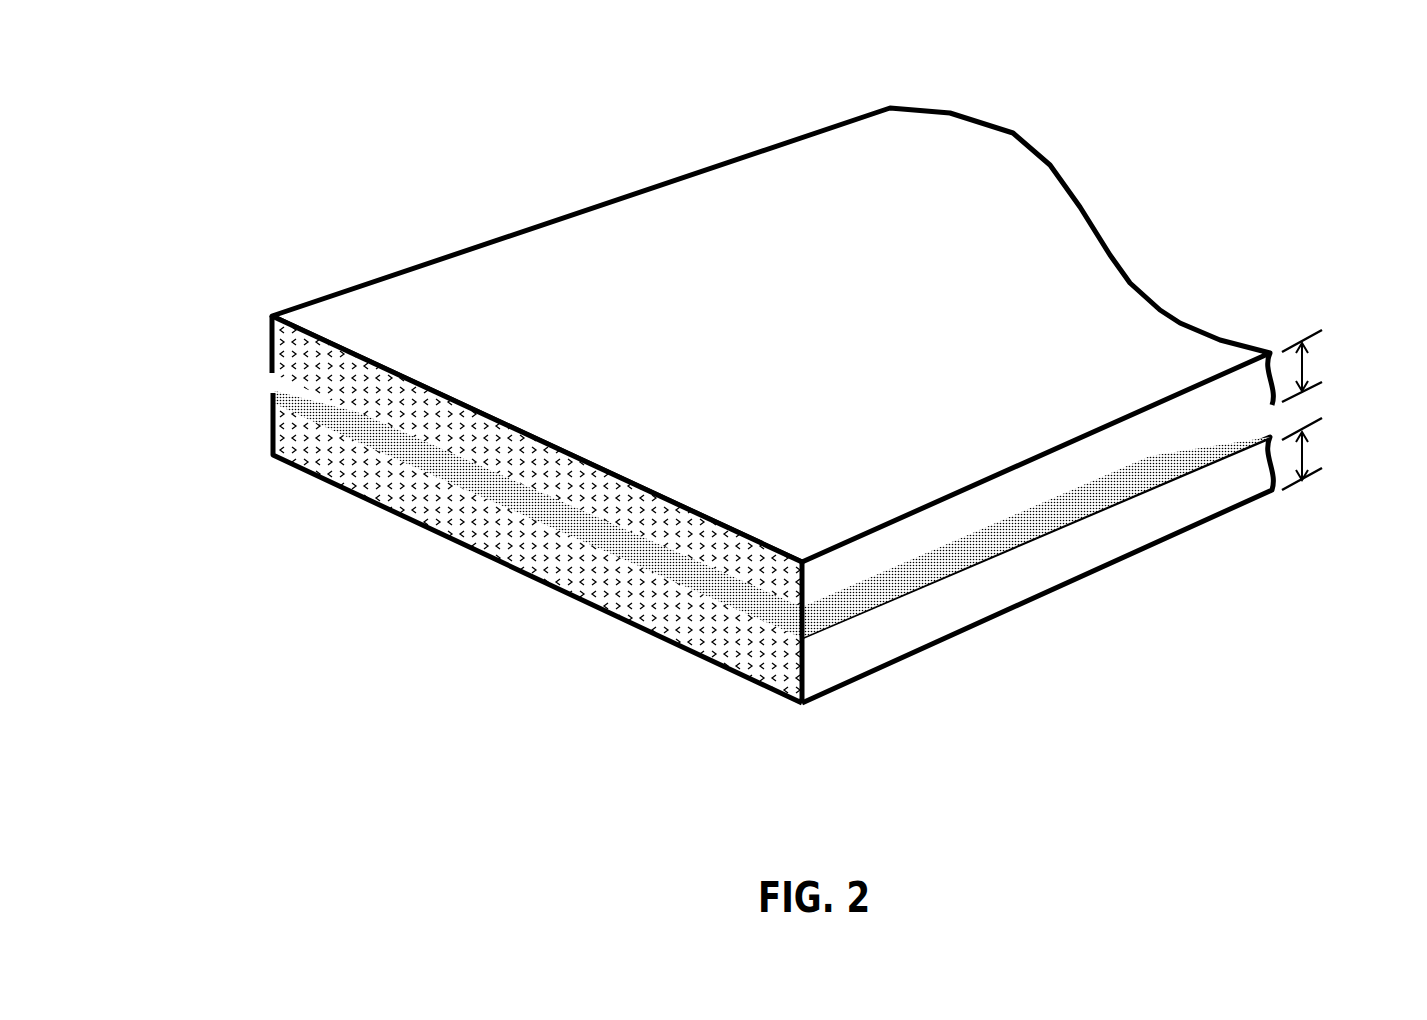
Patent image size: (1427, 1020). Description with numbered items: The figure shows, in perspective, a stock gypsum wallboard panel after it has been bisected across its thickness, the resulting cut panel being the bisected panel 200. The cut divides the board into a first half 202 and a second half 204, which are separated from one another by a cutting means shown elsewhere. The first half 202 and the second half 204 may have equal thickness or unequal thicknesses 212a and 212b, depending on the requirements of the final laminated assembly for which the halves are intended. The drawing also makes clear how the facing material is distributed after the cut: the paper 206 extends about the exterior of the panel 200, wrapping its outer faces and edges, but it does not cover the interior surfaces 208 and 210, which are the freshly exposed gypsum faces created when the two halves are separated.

The bisected panel 200 is at (763, 439).
The first half 202 is at (843, 385).
The second half 204 is at (890, 623).
The paper 206 is at (333, 343).
The interior surface 208 is at (460, 466).
The interior surface 210 is at (558, 504).
The thickness 212a is at (1353, 366).
The thickness 212b is at (1353, 454).